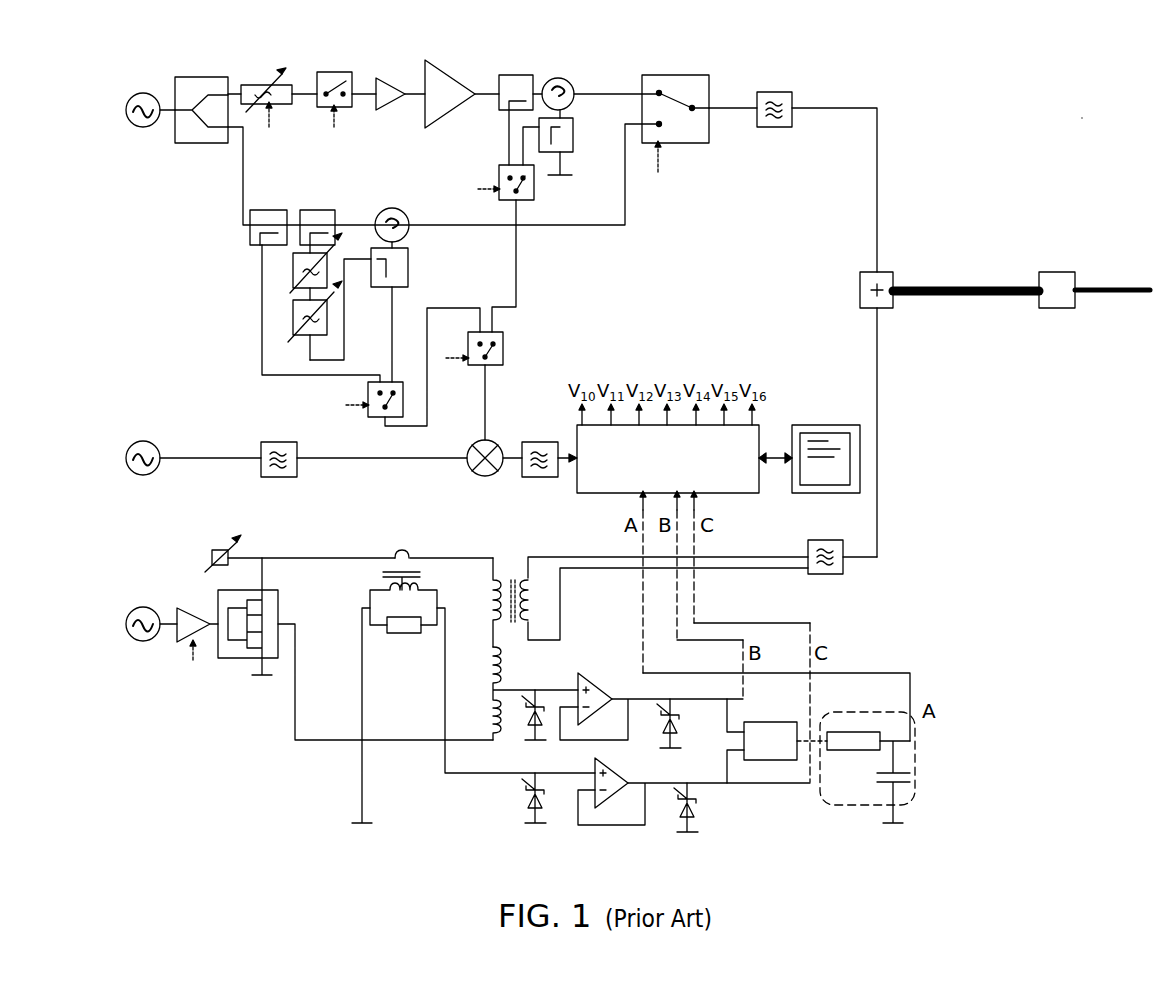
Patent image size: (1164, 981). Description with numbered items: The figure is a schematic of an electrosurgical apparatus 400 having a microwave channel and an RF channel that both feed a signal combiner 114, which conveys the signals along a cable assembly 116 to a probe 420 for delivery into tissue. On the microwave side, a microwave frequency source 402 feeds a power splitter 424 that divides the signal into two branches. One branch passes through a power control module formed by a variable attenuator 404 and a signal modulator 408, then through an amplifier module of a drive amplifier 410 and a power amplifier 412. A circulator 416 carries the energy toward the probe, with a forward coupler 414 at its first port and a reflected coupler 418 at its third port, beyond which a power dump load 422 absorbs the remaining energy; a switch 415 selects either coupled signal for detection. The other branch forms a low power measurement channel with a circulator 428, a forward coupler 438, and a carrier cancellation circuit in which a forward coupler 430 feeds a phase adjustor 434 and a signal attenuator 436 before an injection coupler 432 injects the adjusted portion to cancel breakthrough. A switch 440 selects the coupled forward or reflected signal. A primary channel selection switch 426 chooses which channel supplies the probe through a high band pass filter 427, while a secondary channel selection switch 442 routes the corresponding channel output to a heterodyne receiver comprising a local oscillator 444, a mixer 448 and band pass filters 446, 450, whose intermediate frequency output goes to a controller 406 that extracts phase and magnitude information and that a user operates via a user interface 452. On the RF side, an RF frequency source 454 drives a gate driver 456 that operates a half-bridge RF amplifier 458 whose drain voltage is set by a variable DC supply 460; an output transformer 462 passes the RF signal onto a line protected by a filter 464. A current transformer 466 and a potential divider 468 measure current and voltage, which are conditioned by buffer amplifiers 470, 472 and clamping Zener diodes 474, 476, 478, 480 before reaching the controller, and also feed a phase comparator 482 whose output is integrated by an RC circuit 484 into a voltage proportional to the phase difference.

The electrosurgical apparatus 400 is at (1091, 114).
The microwave frequency source 402 is at (140, 94).
The power splitter 424 is at (202, 77).
The variable attenuator 404 is at (268, 85).
The signal modulator 408 is at (334, 72).
The drive amplifier 410 is at (390, 78).
The power amplifier 412 is at (454, 60).
The forward coupler 414 is at (516, 75).
The circulator 416 is at (562, 78).
The switch 415 is at (499, 164).
The reflected coupler 418 is at (573, 133).
The power dump load 422 is at (568, 174).
The primary channel selection switch 426 is at (676, 75).
The high band pass filter 427 is at (775, 92).
The signal combiner 114 is at (902, 256).
The cable assembly 116 is at (972, 285).
The probe 420 is at (1059, 272).
The forward coupler 438 is at (284, 194).
The forward coupler 430 is at (334, 194).
The circulator 428 is at (404, 194).
The injection coupler 432 is at (408, 262).
The phase adjustor 434 is at (293, 267).
The signal attenuator 436 is at (293, 318).
The switch 440 is at (402, 380).
The secondary channel selection switch 442 is at (503, 354).
The local oscillator 444 is at (142, 442).
The band pass filter 446 is at (281, 477).
The mixer 448 is at (464, 478).
The band pass filter 450 is at (522, 478).
The controller 406 is at (684, 457).
The user interface 452 is at (812, 425).
The filter 464 is at (828, 574).
The variable DC supply 460 is at (212, 551).
The RF frequency source 454 is at (140, 606).
The gate driver 456 is at (182, 634).
The RF amplifier 458 is at (278, 600).
The current transformer 466 is at (388, 573).
The output transformer 462 is at (490, 580).
The potential divider 468 is at (500, 676).
The Zener diode 474 is at (528, 720).
The Zener diode 478 is at (526, 822).
The buffer amplifier 470 is at (596, 682).
The buffer amplifier 472 is at (614, 800).
The Zener diode 476 is at (678, 756).
The Zener diode 480 is at (698, 818).
The phase comparator 482 is at (774, 728).
The RC circuit 484 is at (916, 754).